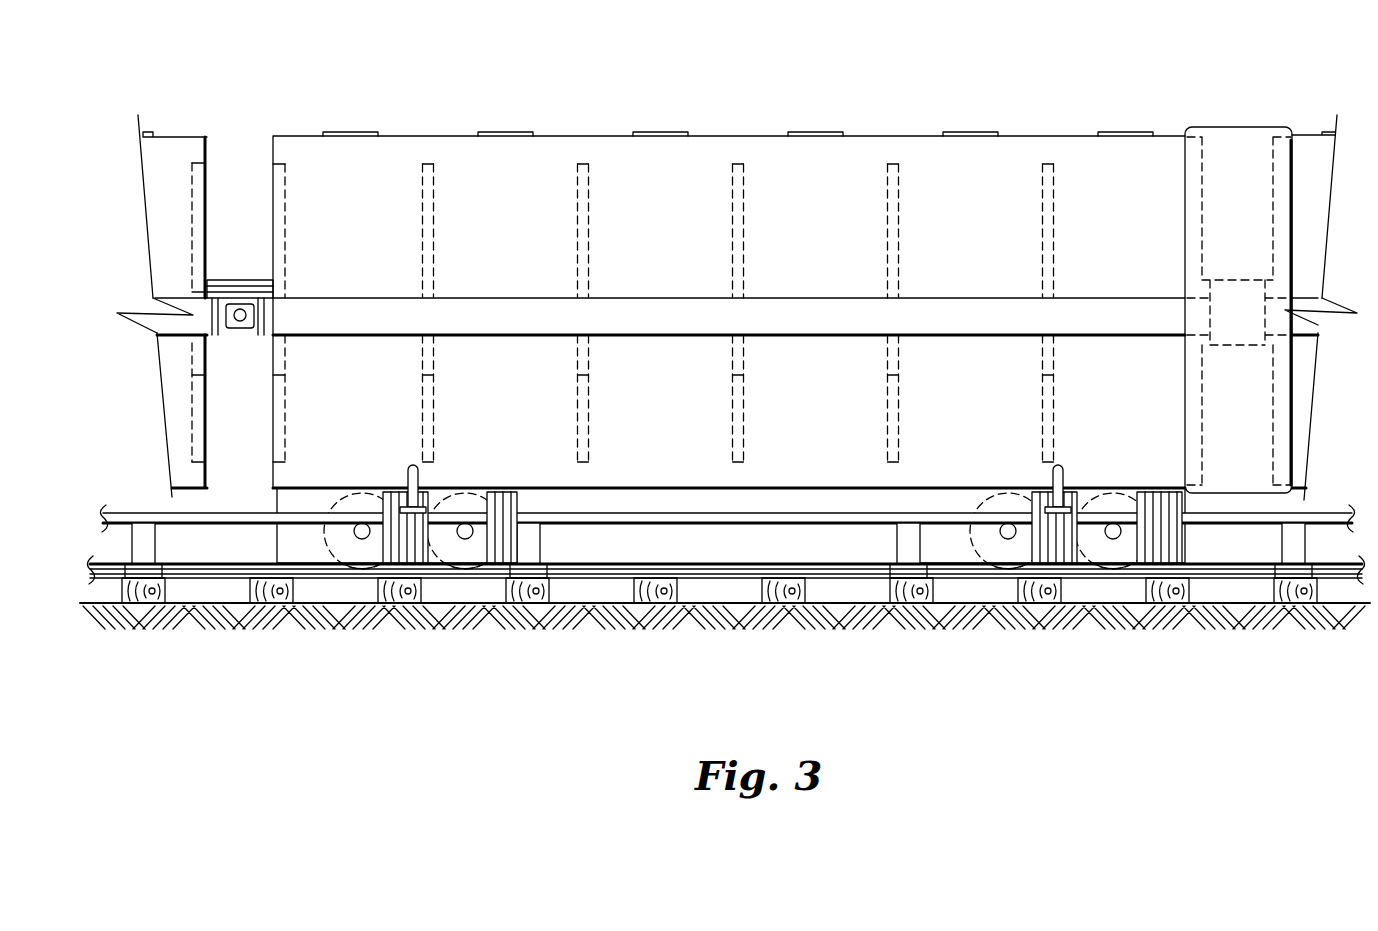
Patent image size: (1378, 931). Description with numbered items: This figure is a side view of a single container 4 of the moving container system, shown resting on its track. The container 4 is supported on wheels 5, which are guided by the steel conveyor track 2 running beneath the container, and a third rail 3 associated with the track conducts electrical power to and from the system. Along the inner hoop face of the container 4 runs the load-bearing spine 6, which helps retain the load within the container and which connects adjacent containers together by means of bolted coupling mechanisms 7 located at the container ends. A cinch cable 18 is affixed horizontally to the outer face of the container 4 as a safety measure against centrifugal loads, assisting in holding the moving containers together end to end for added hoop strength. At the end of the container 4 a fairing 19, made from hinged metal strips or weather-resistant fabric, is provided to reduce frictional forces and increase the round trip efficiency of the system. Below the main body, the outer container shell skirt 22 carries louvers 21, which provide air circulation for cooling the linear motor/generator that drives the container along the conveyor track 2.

The conveyor track 2 is at (183, 572).
The third rail 3 is at (591, 518).
The container 4 is at (326, 90).
The wheels 5 is at (328, 558).
The load-bearing spine 6 is at (542, 313).
The coupling mechanism 7 is at (228, 310).
The cinch cable 18 is at (262, 282).
The fairing 19 is at (1225, 127).
The louvers 21 is at (413, 548).
The outer container shell skirt 22 is at (277, 545).